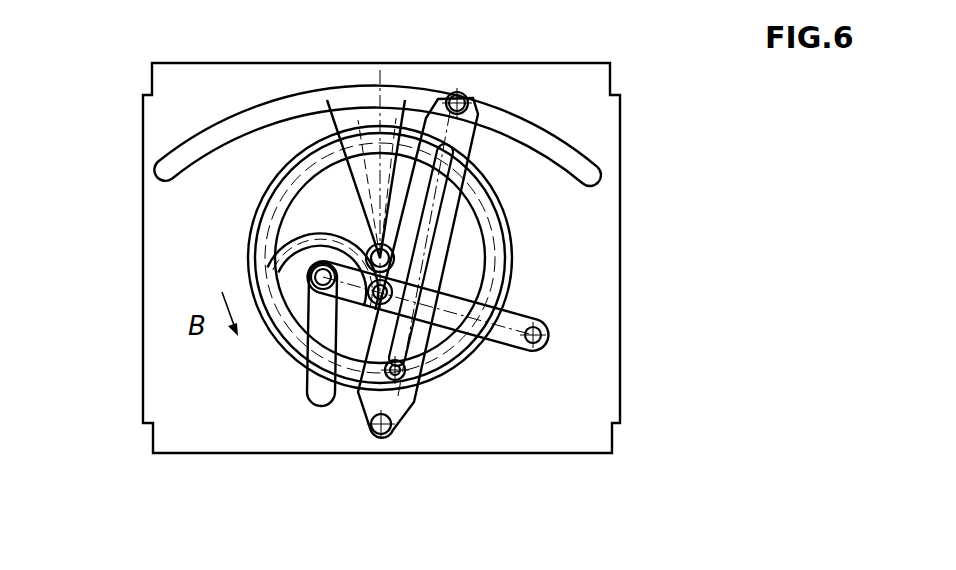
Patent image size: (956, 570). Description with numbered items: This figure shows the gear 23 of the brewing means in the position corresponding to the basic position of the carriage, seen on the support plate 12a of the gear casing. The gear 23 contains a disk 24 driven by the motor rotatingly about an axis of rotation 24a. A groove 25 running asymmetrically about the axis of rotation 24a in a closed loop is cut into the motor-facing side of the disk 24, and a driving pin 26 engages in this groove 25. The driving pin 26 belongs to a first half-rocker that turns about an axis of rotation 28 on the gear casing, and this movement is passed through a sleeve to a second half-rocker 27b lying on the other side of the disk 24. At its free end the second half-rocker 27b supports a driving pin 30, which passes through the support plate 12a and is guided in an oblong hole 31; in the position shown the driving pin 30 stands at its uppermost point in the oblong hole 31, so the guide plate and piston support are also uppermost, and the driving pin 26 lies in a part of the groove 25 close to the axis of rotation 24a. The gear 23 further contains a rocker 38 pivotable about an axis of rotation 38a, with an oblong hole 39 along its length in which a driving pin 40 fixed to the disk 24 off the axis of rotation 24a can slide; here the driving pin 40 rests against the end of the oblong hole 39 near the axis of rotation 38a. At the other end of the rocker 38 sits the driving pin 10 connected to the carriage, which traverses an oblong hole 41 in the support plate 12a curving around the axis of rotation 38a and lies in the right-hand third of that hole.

The driving pin 10 is at (586, 88).
The support plate 12a is at (608, 296).
The gear 23 is at (660, 288).
The disk 24 is at (346, 238).
The axis of rotation 24a is at (556, 216).
The groove 25 is at (272, 203).
The driving pin 26 is at (327, 102).
The second half-rocker 27b is at (528, 328).
The axis of rotation 28 is at (545, 332).
The driving pin 30 is at (311, 274).
The oblong hole 31 is at (313, 392).
The rocker 38 is at (405, 402).
The axis of rotation 38a is at (382, 434).
The oblong hole 39 is at (560, 255).
The driving pin 40 is at (556, 404).
The oblong hole 41 is at (520, 125).